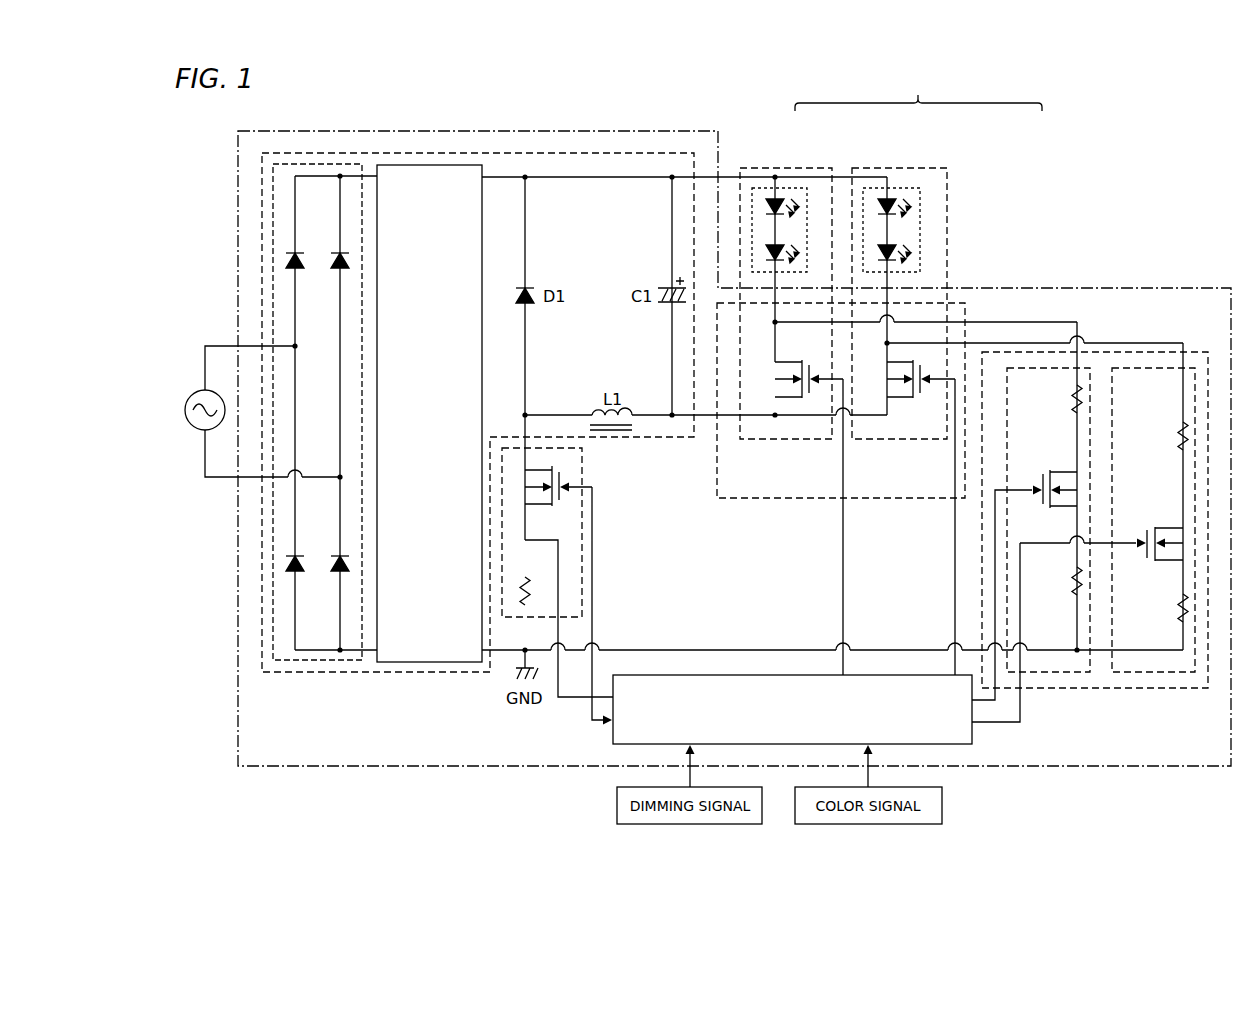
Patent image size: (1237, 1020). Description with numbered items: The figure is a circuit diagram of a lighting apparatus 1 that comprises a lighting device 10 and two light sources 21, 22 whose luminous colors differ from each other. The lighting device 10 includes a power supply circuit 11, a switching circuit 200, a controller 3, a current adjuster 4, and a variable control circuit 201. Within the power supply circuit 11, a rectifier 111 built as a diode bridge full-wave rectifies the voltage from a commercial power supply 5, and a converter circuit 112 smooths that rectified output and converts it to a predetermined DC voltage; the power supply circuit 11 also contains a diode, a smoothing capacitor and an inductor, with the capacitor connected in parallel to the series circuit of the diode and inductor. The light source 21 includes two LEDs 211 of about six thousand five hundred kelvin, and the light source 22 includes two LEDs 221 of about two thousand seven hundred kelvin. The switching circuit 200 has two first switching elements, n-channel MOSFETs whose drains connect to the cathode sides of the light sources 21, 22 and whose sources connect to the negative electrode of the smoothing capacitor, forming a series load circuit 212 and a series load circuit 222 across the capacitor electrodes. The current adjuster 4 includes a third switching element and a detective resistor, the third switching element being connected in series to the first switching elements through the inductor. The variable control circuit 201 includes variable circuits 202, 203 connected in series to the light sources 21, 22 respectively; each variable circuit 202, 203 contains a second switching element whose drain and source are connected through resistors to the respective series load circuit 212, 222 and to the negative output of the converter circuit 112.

The lighting apparatus 1 is at (918, 92).
The lighting device 10 is at (1024, 288).
The power supply circuit 11 is at (282, 152).
The rectifier 111 is at (352, 163).
The converter circuit 112 is at (440, 164).
The commercial power supply 5 is at (197, 394).
The current adjuster 4 is at (583, 461).
The controller 3 is at (687, 674).
The switching circuit 200 is at (727, 499).
The light source 21 is at (803, 167).
The LEDs 211 is at (767, 250).
The series load circuit 212 is at (783, 440).
The light source 22 is at (912, 167).
The LEDs 221 is at (879, 250).
The series load circuit 222 is at (900, 440).
The variable control circuit 201 is at (1190, 689).
The variable circuit 202 is at (1060, 673).
The variable circuit 203 is at (1140, 673).